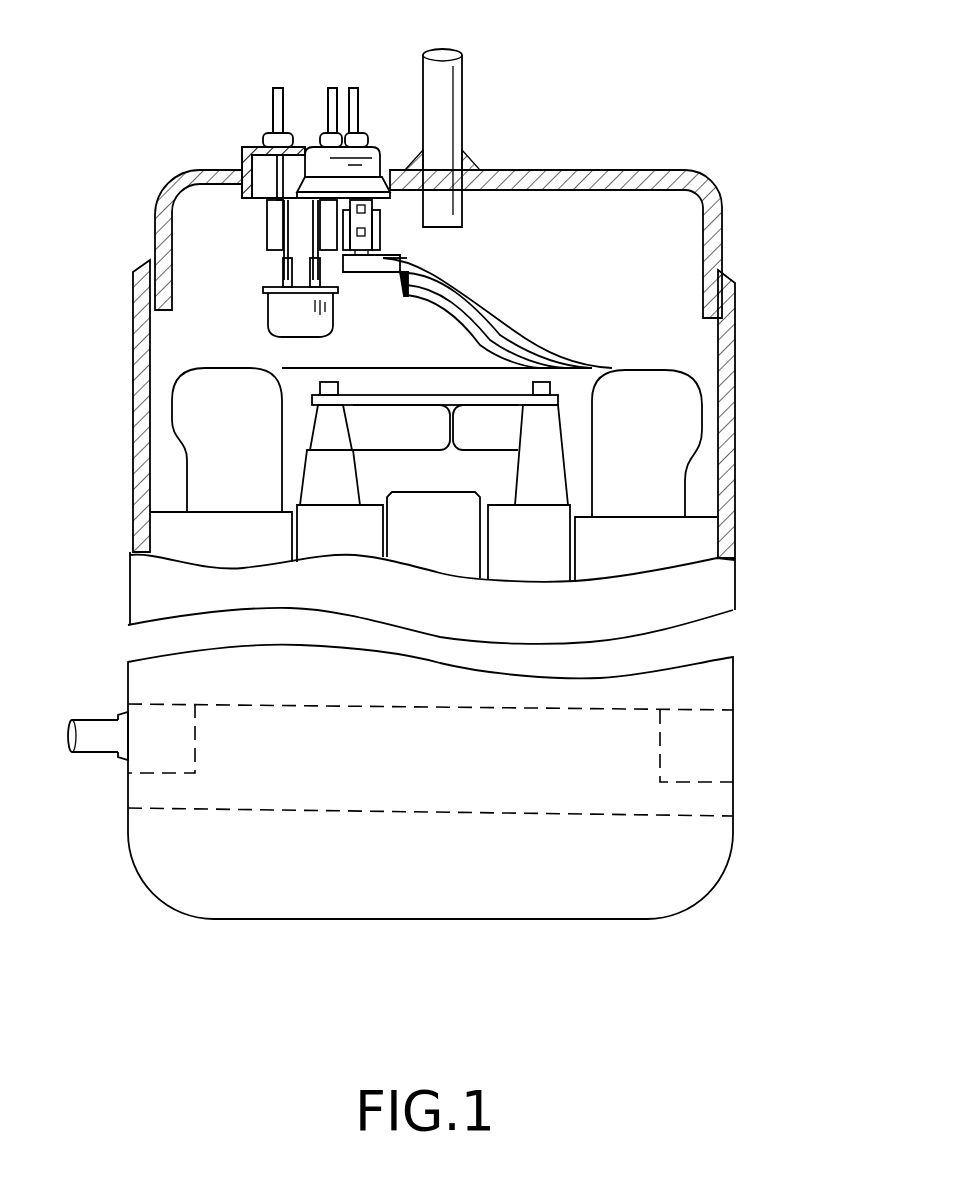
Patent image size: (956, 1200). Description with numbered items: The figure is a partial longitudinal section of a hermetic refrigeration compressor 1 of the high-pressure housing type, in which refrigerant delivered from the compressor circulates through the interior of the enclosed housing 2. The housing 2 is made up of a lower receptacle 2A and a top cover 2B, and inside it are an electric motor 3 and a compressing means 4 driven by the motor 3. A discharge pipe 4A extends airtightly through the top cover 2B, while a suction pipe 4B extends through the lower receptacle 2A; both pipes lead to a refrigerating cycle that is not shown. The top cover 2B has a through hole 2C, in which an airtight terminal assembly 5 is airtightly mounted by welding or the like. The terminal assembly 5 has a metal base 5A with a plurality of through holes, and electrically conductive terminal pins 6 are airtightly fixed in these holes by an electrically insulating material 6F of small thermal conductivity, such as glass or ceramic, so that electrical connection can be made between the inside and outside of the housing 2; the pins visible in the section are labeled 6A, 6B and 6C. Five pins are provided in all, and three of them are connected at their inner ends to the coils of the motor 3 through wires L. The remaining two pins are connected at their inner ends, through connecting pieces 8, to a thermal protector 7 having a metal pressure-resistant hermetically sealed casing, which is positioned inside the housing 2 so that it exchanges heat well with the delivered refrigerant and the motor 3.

The hermetic refrigeration compressor 1 is at (708, 170).
The enclosed housing 2 is at (737, 415).
The lower receptacle 2A is at (733, 312).
The top cover 2B is at (718, 250).
The through hole 2C is at (243, 160).
The electric motor 3 is at (673, 542).
The compressing means 4 is at (663, 747).
The discharge pipe 4A is at (450, 108).
The suction pipe 4B is at (97, 720).
The airtight terminal assembly 5 is at (380, 162).
The metal base 5A is at (245, 150).
The terminal pins 6 is at (383, 68).
The first terminal pin 6A is at (272, 132).
The second terminal pin 6B is at (333, 130).
The third terminal pin 6C is at (356, 130).
The electrically insulating material 6F is at (268, 140).
The thermal protector 7 is at (275, 318).
The connecting pieces 8 is at (272, 222).
The wires L is at (497, 318).